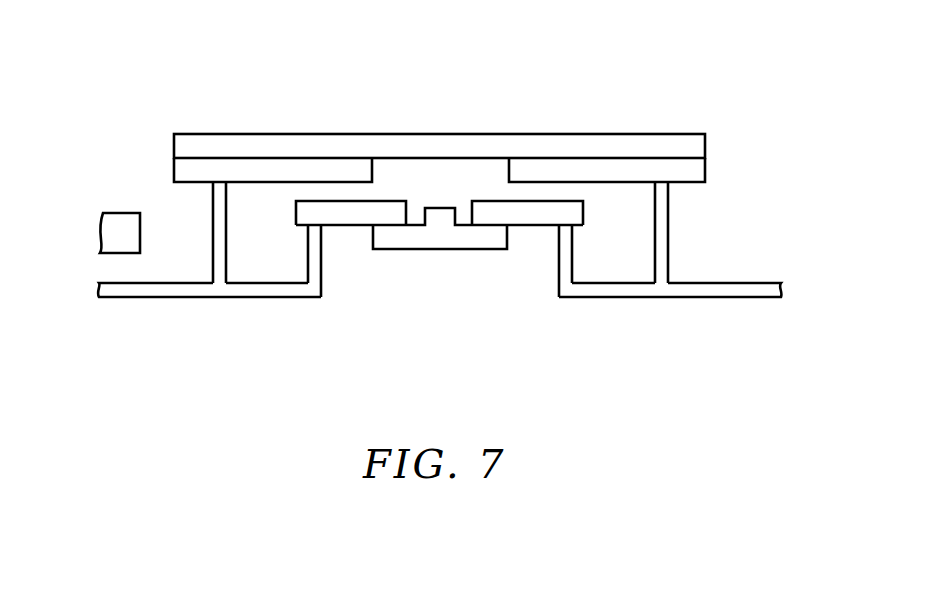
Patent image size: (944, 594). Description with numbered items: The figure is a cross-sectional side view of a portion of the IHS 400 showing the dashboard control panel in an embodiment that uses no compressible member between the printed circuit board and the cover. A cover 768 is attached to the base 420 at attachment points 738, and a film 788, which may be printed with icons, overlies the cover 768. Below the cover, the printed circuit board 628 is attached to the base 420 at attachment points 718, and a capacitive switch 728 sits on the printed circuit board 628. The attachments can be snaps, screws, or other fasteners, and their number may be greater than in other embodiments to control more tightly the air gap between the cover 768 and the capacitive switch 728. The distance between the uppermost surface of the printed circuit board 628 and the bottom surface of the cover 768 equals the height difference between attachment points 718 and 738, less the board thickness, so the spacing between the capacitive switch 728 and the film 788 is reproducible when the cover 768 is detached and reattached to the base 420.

The information handling system (IHS) 400 is at (803, 36).
The base 420 is at (126, 223).
The printed circuit board 628 is at (343, 217).
The attachment points 718 is at (313, 257).
The capacitive switch 728 is at (455, 237).
The attachment points 738 is at (218, 229).
The cover 768 is at (697, 172).
The film 788 is at (652, 141).